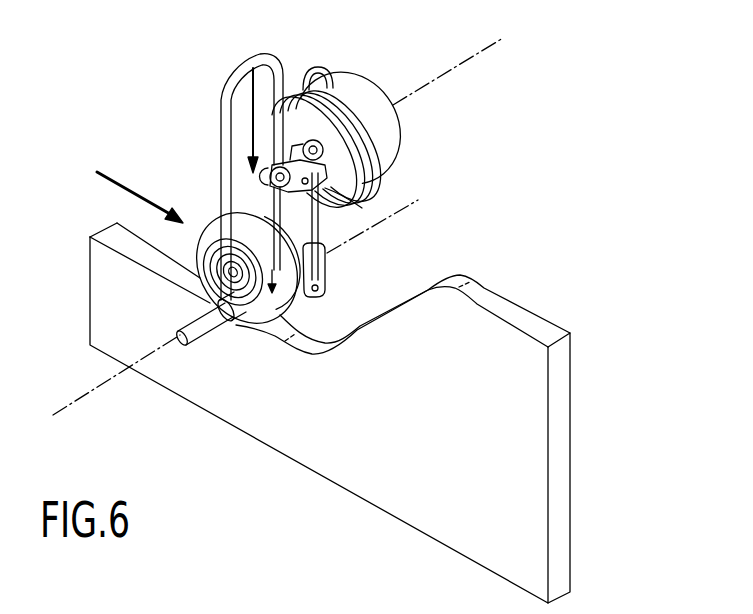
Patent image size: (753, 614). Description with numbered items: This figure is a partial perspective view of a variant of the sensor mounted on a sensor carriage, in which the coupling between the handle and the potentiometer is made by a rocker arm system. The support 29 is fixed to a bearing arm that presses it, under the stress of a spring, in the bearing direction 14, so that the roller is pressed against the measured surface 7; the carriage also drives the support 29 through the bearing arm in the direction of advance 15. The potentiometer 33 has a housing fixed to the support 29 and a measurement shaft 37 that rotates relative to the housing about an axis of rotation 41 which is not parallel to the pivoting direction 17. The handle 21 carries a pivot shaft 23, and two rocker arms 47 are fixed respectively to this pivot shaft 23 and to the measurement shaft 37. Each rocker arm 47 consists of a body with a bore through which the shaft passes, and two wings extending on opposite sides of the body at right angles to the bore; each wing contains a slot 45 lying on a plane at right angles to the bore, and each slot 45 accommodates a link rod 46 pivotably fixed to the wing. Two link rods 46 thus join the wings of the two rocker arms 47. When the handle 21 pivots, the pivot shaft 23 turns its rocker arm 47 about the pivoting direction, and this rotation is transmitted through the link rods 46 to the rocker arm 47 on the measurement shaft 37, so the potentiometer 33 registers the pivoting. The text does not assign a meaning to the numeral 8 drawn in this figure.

The measured surface 7 is at (500, 300).
The bearing housing 8 is at (205, 247).
The bearing direction 14 is at (252, 113).
The direction of advance 15 is at (123, 183).
The pivoting direction 17 is at (97, 393).
The handle 21 is at (273, 317).
The pivot shaft 23 is at (200, 330).
The support 29 is at (227, 78).
The potentiometer 33 is at (387, 142).
The measurement shaft 37 is at (267, 182).
The axis of rotation 41 is at (480, 52).
The slot 45 is at (303, 147).
The link rod 46 is at (320, 228).
The rocker arm 47 is at (362, 207).